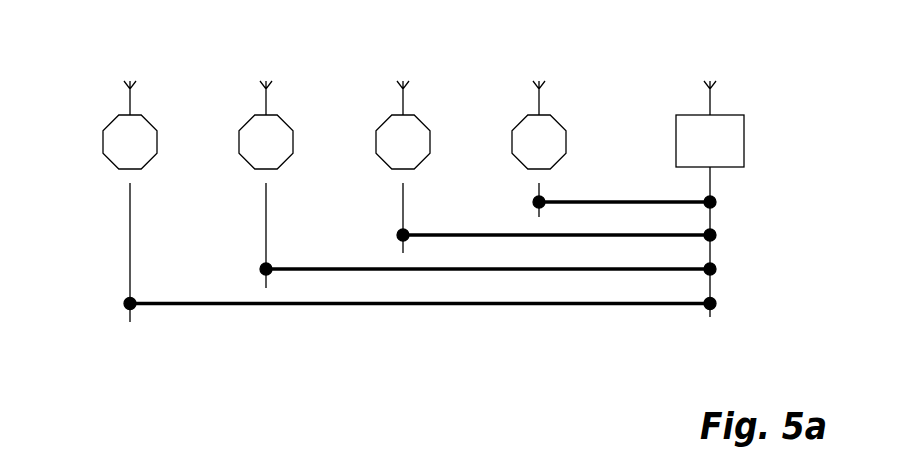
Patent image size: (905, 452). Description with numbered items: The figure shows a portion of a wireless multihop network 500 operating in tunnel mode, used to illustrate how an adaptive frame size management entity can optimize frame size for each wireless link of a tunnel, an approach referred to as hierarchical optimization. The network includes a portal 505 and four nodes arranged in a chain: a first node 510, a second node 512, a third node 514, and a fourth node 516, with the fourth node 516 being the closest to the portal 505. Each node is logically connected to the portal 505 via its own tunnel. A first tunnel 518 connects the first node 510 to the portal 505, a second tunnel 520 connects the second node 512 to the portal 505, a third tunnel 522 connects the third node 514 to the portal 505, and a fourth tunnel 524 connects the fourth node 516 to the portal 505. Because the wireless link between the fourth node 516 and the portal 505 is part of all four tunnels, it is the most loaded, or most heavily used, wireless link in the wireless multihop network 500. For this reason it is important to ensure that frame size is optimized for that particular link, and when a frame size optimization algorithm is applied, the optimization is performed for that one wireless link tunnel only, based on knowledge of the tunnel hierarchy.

The wireless multihop network 500 is at (91, 30).
The portal 505 is at (676, 115).
The first node 510 is at (105, 133).
The second node 512 is at (241, 133).
The third node 514 is at (378, 133).
The fourth node 516 is at (514, 133).
The first tunnel 518 is at (645, 301).
The second tunnel 520 is at (645, 267).
The third tunnel 522 is at (645, 233).
The fourth tunnel 524 is at (645, 200).